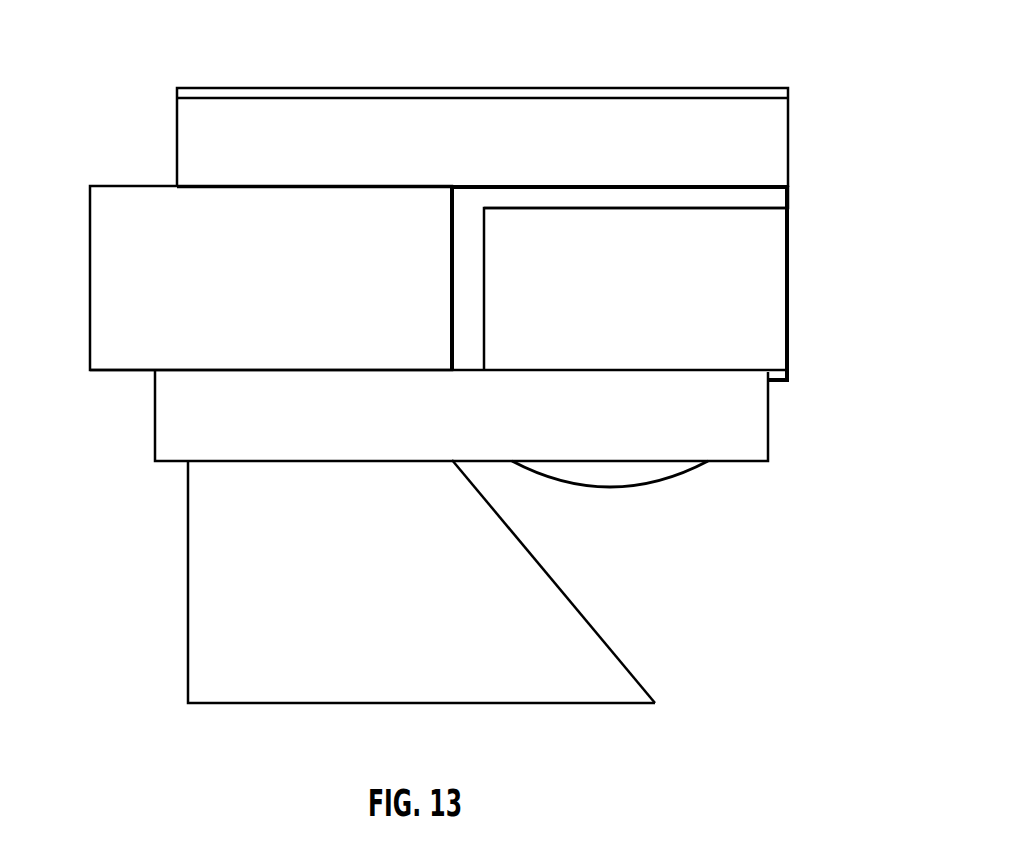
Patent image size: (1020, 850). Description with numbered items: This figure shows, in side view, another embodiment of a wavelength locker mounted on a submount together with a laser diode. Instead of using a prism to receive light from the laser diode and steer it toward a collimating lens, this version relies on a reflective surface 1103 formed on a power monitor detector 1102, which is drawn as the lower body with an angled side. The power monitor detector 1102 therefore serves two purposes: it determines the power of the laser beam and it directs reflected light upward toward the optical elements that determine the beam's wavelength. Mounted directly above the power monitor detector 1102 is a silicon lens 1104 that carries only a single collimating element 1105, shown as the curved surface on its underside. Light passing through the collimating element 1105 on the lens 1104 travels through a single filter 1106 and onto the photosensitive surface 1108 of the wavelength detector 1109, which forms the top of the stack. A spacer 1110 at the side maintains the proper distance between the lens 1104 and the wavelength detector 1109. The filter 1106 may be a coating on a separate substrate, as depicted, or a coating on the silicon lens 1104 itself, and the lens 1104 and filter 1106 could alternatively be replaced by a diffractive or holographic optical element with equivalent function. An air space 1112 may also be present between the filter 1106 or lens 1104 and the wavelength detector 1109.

The power monitor detector 1102 is at (250, 562).
The reflective surface 1103 is at (603, 635).
The silicon lens 1104 is at (770, 417).
The collimating element 1105 is at (628, 488).
The filter 1106 is at (738, 305).
The photosensitive surface 1108 is at (590, 87).
The wavelength detector 1109 is at (757, 139).
The spacer 1110 is at (140, 266).
The air space 1112 is at (757, 200).